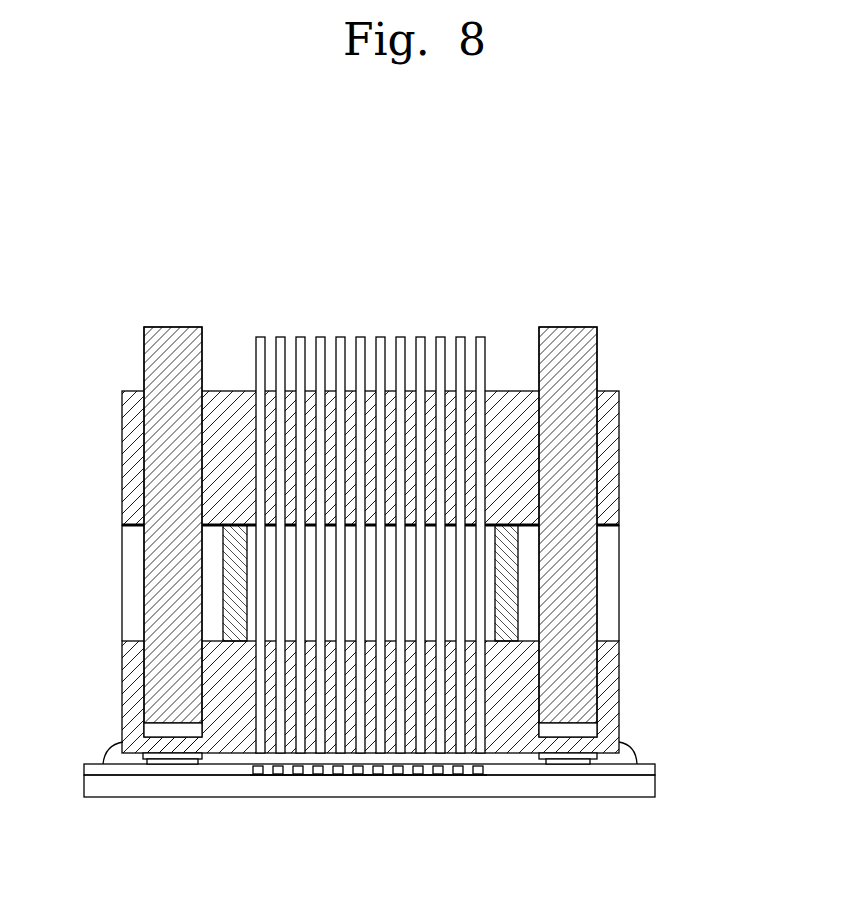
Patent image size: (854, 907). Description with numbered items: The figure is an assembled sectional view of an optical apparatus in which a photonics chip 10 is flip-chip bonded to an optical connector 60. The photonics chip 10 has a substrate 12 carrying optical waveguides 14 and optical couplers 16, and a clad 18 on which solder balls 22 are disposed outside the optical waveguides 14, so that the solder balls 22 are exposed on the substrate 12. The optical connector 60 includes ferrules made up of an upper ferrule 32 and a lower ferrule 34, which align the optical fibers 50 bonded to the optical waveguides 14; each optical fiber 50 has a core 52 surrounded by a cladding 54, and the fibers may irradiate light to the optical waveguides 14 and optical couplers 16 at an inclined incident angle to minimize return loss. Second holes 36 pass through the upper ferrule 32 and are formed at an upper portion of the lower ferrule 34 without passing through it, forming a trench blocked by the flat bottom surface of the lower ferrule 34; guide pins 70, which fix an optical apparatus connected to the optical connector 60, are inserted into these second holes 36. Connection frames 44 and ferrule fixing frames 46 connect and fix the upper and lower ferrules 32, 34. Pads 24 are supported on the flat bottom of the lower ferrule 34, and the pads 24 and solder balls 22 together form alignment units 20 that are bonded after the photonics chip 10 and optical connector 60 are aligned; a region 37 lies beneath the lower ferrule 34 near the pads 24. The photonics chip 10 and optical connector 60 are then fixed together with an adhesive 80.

The photonics chip 10 is at (400, 786).
The substrate 12 is at (562, 790).
The optical waveguides 14 is at (463, 770).
The optical couplers 16 is at (480, 775).
The clad 18 is at (245, 773).
The alignment units 20 is at (367, 822).
The solder balls 22 is at (170, 763).
The pads 24 is at (178, 765).
The upper ferrule 32 is at (130, 462).
The lower ferrule 34 is at (127, 688).
The second holes 36 is at (152, 731).
The via region 37 is at (162, 747).
The connection frames 44 is at (230, 575).
The ferrule fixing frames 46 is at (127, 608).
The optical fibers 50 is at (384, 493).
The core 52 is at (457, 337).
The cladding 54 is at (488, 512).
The optical connector 60 is at (368, 561).
The guide pins 70 is at (568, 335).
The adhesive 80 is at (625, 752).